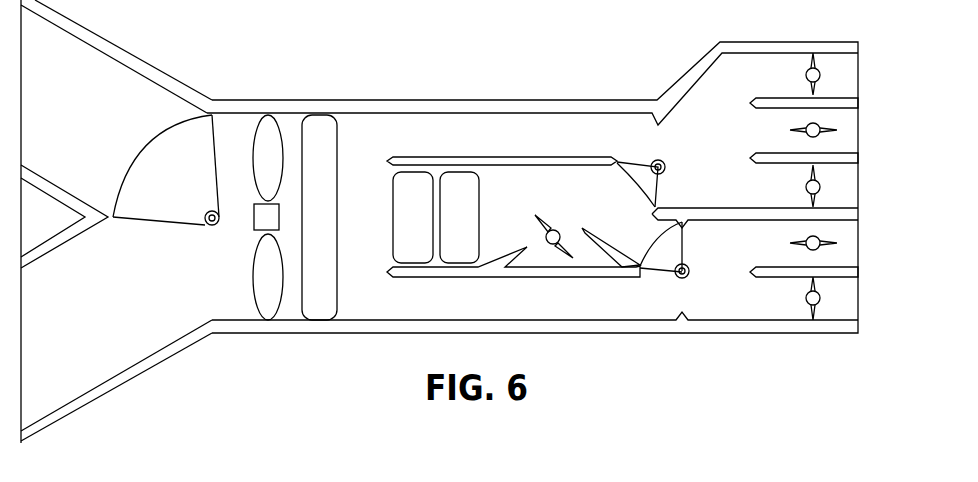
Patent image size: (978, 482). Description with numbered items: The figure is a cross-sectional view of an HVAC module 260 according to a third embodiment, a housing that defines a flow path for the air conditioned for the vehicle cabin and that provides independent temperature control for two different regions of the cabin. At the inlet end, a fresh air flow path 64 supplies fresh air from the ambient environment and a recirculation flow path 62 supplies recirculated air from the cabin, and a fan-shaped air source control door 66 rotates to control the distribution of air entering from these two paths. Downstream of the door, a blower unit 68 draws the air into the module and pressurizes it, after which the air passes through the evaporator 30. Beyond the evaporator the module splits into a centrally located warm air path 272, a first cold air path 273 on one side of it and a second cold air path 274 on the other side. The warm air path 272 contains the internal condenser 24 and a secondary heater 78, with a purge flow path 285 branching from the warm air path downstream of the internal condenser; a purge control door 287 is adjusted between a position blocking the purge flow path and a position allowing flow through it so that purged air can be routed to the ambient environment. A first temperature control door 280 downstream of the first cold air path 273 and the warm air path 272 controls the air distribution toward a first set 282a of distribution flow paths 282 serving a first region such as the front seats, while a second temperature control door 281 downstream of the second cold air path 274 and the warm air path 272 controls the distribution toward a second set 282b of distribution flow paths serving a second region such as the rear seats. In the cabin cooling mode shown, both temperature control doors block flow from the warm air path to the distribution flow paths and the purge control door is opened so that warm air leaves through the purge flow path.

The HVAC module 260 is at (454, 97).
The fresh air flow path 64 is at (80, 121).
The recirculation flow path 62 is at (80, 334).
The air source control door 66 is at (172, 228).
The blower unit 68 is at (253, 212).
The evaporator 30 is at (329, 227).
The internal condenser 24 is at (424, 225).
The secondary heater 78 is at (471, 225).
The first cold air path 273 is at (570, 145).
The warm air path 272 is at (570, 198).
The second cold air path 274 is at (570, 310).
The purge flow path 285 is at (592, 262).
The purge control door 287 is at (540, 245).
The first temperature control door 280 is at (663, 166).
The second temperature control door 281 is at (690, 270).
The distribution flow paths 282 is at (755, 293).
The first set of distribution flow paths 282a is at (848, 73).
The second set of distribution flow paths 282b is at (848, 242).